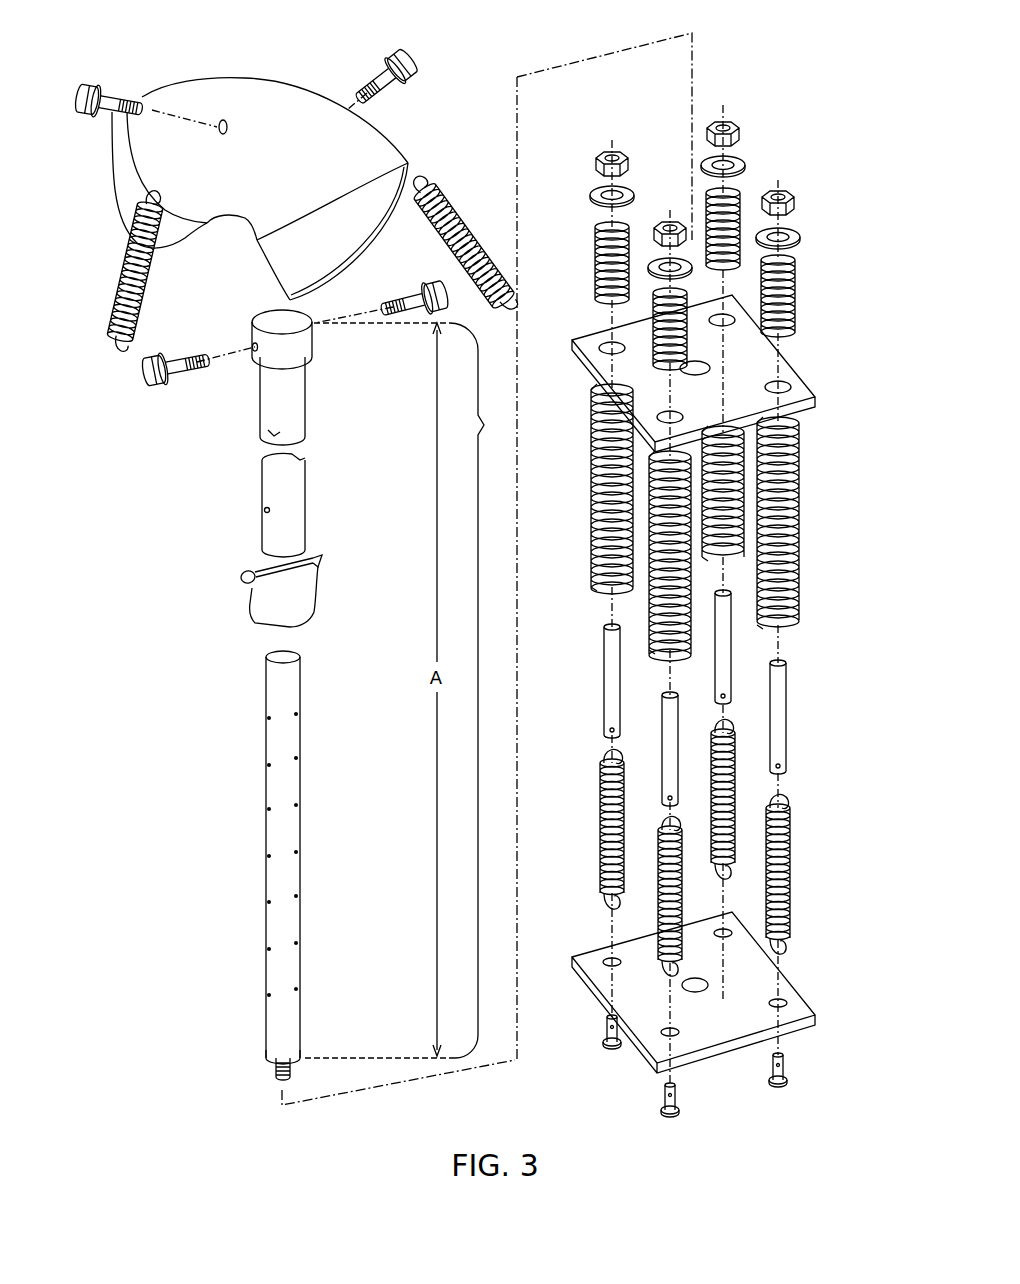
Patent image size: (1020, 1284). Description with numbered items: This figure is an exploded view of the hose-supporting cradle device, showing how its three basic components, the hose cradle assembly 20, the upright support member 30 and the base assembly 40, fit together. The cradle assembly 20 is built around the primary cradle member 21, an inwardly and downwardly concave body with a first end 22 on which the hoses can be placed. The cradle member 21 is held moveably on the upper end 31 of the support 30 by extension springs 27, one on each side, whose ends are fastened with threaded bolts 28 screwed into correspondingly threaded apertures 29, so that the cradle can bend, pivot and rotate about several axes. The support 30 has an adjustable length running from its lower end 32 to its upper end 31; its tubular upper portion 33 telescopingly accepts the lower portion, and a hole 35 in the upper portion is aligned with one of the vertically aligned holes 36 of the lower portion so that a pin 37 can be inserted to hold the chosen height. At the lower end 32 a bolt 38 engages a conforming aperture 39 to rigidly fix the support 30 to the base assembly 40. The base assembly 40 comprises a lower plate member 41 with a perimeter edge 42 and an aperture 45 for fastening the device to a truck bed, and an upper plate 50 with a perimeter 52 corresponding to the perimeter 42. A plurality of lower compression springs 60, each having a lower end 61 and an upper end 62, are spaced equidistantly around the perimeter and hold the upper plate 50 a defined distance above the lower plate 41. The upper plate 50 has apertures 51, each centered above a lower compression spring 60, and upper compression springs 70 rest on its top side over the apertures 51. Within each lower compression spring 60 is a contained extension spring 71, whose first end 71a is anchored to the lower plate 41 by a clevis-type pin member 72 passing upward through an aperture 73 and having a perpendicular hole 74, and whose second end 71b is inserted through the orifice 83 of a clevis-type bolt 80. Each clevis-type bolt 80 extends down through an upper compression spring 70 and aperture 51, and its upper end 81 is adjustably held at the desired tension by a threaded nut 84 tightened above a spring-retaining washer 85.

The hose cradle assembly 20 is at (443, 53).
The primary cradle member 21 is at (283, 74).
The first end of cradle member 22 is at (130, 168).
The extension spring 27 is at (142, 283).
The threaded bolt 28 is at (98, 122).
The threaded aperture 29 is at (223, 120).
The support member 30 is at (358, 713).
The upper end of support 31 is at (308, 348).
The lower end of support 32 is at (267, 1060).
The upper portion of support 33 is at (283, 505).
The vertically aligning hole 35 is at (265, 511).
The vertically aligned holes 36 is at (252, 716).
The lynch pin 37 is at (245, 578).
The bolt 38 is at (278, 1070).
The aperture 39 is at (708, 365).
The base assembly 40 is at (829, 66).
The lower plate member 41 is at (697, 993).
The perimeter edge of lower plate 42 is at (572, 967).
The aperture of lower plate 45 is at (708, 983).
The upper plate 50 is at (700, 360).
The aperture of upper plate 51 is at (725, 318).
The perimeter of upper plate 52 is at (572, 350).
The lower compression spring 60 is at (698, 522).
The lower end of lower compression spring 61 is at (605, 587).
The upper end of lower compression spring 62 is at (650, 458).
The upper compression spring 70 is at (637, 222).
The extension spring 71 is at (695, 908).
The first end of extension spring 71a is at (603, 905).
The second end of extension spring 71b is at (658, 822).
The clevis-type pin member 72 is at (699, 1071).
The aperture of bottom plate 73 is at (608, 960).
The perpendicular hole of pin 74 is at (607, 1030).
The clevis-type bolt 80 is at (699, 698).
The upper end of clevis-type bolt 81 is at (600, 630).
The orifice of clevis-type bolt 83 is at (604, 733).
The threaded nut 84 is at (618, 150).
The spring-retaining washer 85 is at (625, 190).